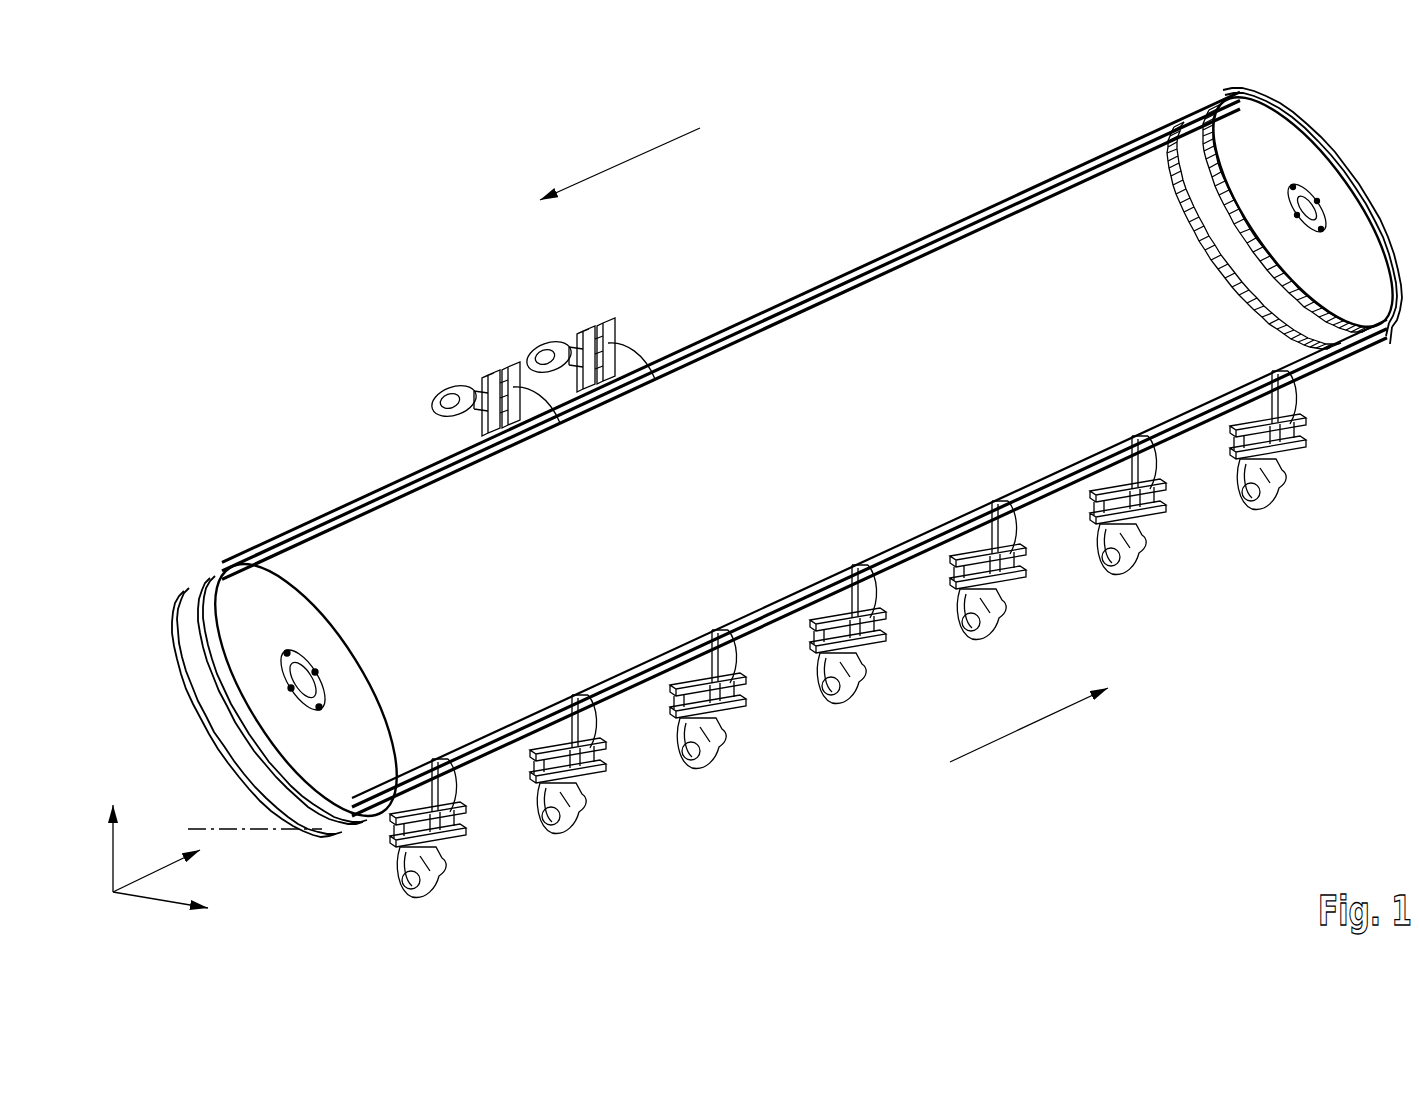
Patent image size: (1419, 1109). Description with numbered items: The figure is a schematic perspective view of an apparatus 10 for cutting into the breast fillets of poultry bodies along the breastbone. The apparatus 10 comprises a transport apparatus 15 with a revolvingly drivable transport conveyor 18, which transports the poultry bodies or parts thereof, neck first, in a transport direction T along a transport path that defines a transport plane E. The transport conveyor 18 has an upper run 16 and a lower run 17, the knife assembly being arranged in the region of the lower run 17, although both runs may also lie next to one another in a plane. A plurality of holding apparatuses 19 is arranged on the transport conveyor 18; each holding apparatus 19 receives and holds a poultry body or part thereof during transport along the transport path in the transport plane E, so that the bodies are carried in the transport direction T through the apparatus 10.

The apparatus 10 is at (890, 182).
The transport apparatus 15 is at (843, 258).
The upper run 16 is at (733, 333).
The lower run 17 is at (612, 705).
The transport conveyor 18 is at (800, 290).
The holding apparatus 19 is at (545, 335).
The transport direction T is at (598, 168).
The transport plane E is at (160, 887).